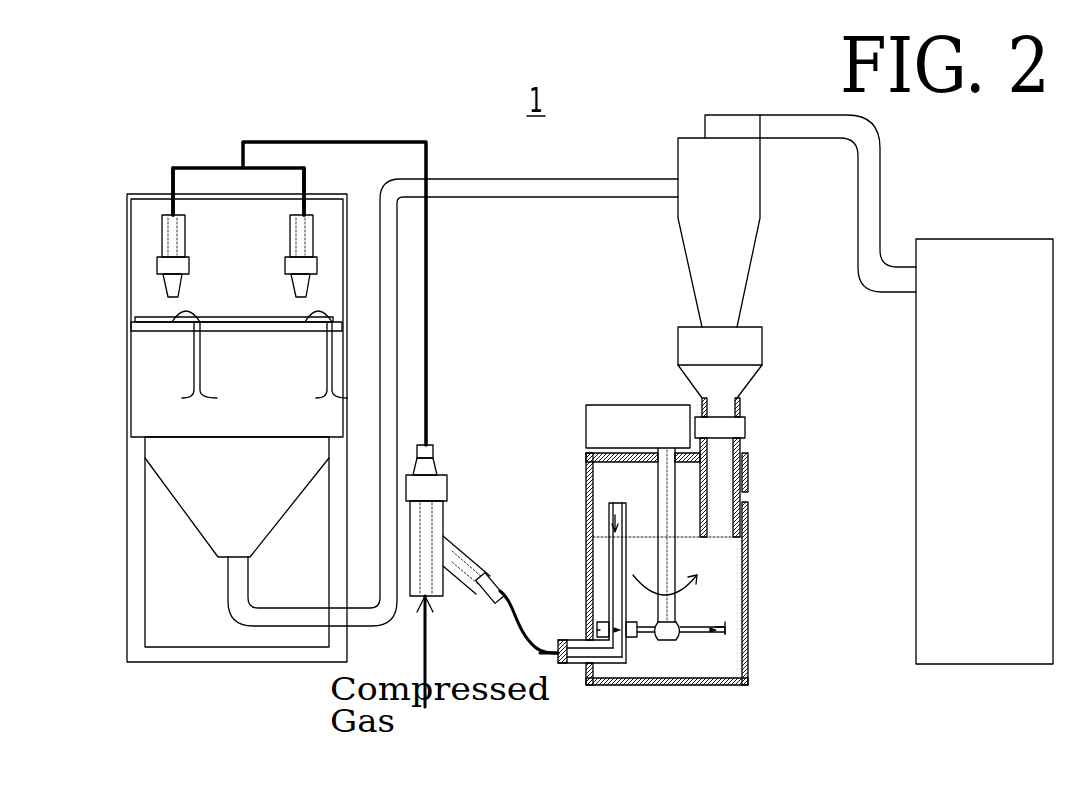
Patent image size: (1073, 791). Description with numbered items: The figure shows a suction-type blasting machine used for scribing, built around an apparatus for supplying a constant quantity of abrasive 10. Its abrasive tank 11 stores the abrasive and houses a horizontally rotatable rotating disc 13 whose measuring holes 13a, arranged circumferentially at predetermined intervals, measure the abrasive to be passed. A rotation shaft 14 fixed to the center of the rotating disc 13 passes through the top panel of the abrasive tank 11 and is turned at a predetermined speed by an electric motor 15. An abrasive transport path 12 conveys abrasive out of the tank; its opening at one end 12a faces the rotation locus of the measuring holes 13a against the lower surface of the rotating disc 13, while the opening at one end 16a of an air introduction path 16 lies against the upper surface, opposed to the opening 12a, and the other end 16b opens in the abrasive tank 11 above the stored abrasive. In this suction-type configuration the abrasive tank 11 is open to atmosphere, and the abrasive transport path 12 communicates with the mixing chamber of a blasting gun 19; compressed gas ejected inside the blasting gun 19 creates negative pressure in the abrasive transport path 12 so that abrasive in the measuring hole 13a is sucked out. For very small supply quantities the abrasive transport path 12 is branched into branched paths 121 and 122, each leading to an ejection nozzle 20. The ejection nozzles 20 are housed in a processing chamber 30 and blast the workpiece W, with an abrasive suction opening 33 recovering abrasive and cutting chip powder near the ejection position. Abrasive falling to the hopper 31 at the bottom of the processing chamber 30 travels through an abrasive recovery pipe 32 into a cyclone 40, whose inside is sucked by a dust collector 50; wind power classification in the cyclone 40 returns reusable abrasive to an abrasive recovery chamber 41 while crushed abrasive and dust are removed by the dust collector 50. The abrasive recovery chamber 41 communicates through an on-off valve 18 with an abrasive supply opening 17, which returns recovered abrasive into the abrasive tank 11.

The apparatus for supplying a constant quantity of abrasive 10 is at (750, 575).
The abrasive tank 11 is at (750, 550).
The abrasive transport path 12 is at (580, 662).
The opening at one end of the abrasive transport path 12a is at (618, 642).
The rotating disc 13 is at (698, 634).
The measuring hole 13a is at (718, 624).
The rotation shaft 14 is at (660, 497).
The electric motor 15 is at (607, 405).
The air introduction path 16 is at (608, 548).
The opening at one end of the air introduction path 16a is at (618, 627).
The other end of the air introduction path 16b is at (587, 493).
The abrasive supply opening 17 is at (748, 465).
The on-off valve 18 is at (745, 428).
The blasting gun 19 is at (443, 527).
The ejection nozzle 20 is at (184, 250).
The branched path 121 is at (172, 190).
The branched path 122 is at (304, 186).
The processing chamber 30 is at (125, 260).
The hopper 31 is at (185, 512).
The abrasive recovery pipe 32 is at (283, 626).
The abrasive suction opening 33 is at (160, 333).
The workpiece W is at (143, 317).
The cyclone 40 is at (760, 223).
The abrasive recovery chamber 41 is at (762, 350).
The dust collector 50 is at (975, 238).